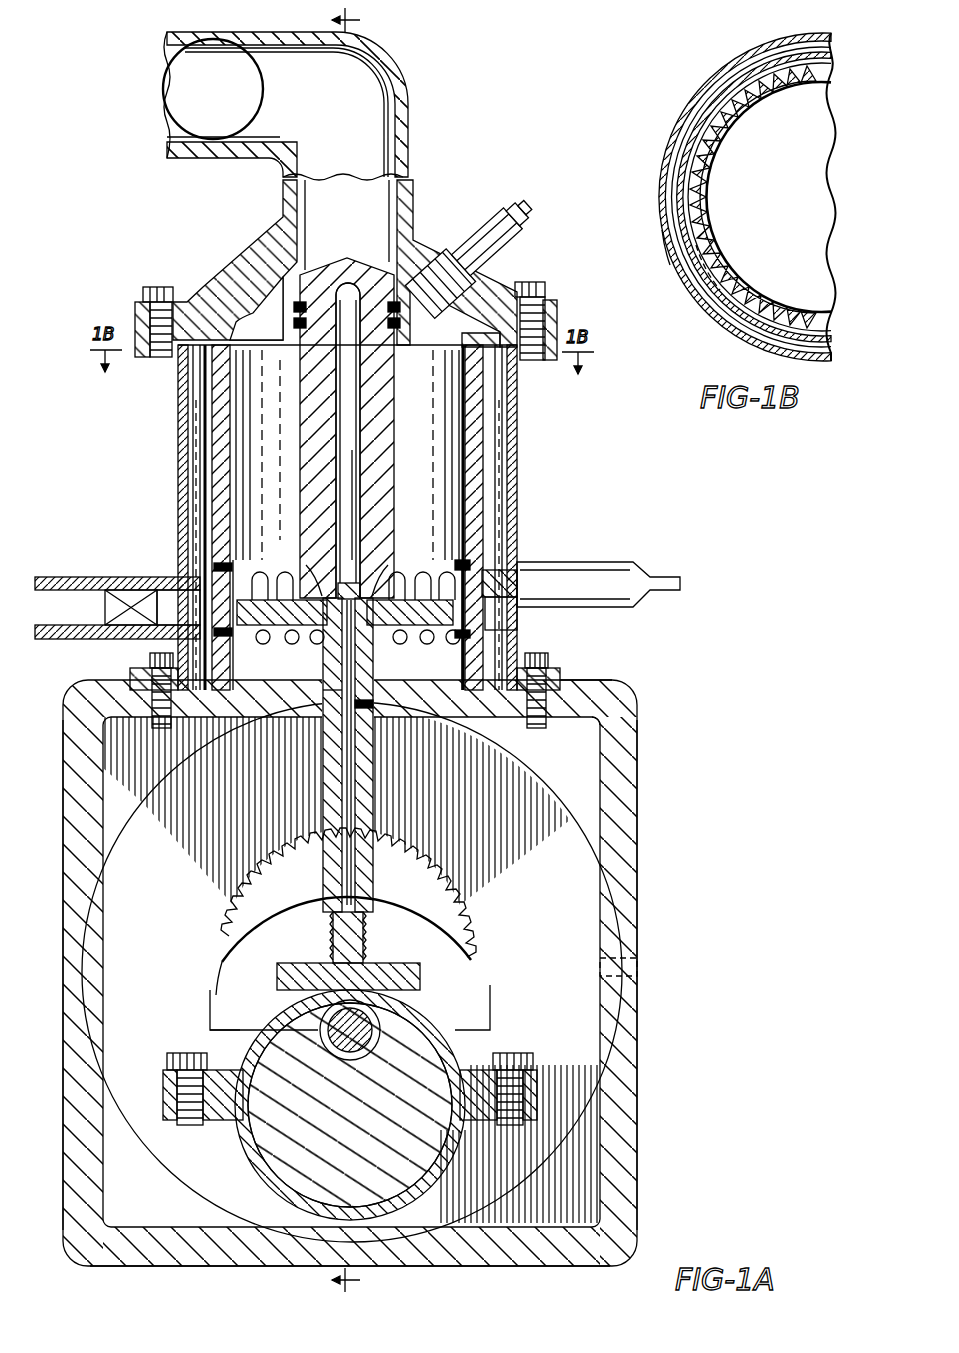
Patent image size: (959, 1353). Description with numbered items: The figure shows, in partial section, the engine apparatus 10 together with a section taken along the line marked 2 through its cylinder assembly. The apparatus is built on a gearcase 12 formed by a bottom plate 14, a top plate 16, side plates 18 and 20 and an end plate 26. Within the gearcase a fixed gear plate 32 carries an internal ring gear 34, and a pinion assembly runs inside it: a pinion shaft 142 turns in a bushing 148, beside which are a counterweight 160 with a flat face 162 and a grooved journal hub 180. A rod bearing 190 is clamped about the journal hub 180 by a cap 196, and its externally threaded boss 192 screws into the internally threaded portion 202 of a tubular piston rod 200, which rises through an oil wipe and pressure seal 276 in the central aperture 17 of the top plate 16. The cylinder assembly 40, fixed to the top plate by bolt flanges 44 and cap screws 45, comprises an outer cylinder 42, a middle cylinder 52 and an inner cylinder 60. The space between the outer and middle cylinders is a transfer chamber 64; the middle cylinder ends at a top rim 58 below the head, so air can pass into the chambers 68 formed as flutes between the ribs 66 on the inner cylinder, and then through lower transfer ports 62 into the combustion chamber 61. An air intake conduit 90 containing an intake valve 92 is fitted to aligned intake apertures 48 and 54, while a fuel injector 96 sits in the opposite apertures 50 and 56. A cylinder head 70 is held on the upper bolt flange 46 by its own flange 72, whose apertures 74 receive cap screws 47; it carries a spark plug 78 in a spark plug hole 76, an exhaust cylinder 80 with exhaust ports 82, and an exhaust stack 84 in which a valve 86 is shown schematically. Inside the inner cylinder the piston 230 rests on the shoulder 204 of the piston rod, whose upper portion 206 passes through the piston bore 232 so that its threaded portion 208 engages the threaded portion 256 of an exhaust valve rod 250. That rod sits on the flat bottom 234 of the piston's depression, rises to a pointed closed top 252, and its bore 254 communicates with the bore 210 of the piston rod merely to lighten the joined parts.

In FIG. 1A, the section line 2- 2 is at (352, 650).
In FIG. 1A, the engine apparatus 10 is at (190, 215).
In FIG. 1A, the gearcase 12 is at (652, 855).
In FIG. 1A, the bottom plate 14 is at (525, 1265).
In FIG. 1A, the top plate 16 is at (595, 680).
In FIG. 1A, the central hole or aperture 17 is at (323, 725).
In FIG. 1A, the side plate 18 is at (637, 905).
In FIG. 1A, the side plate 20 is at (63, 842).
In FIG. 1A, the end plate 26 is at (602, 722).
In FIG. 1A, the fixed gear plate 32 is at (548, 800).
In FIG. 1A, the internal ring gear 34 is at (455, 895).
In FIG. 1A, the cylinder assembly 40 is at (532, 438).
In FIG. 1A, the outer cylinder 42 is at (516, 475).
In FIG. 1B, the outer cylinder 42 is at (672, 157).
In FIG. 1A, the bolt flanges 44 is at (560, 668).
In FIG. 1A, the cap screws 45 is at (548, 655).
In FIG. 1A, the bolt flange 46 is at (557, 357).
In FIG. 1A, the bolts or cap screws 47 is at (548, 294).
In FIG. 1A, the air intake aperture 48 is at (160, 630).
In FIG. 1A, the fuel injector aperture 50 is at (517, 612).
In FIG. 1A, the middle cylinder 52 is at (516, 512).
In FIG. 1B, the middle cylinder 52 is at (667, 200).
In FIG. 1A, the air intake aperture 54 is at (170, 578).
In FIG. 1A, the fuel injector aperture 56 is at (517, 570).
In FIG. 1A, the top rim 58 is at (505, 398).
In FIG. 1B, the top rim 58 is at (693, 133).
In FIG. 1A, the inner cylinder 60 is at (230, 456).
In FIG. 1B, the inner cylinder 60 is at (710, 180).
In FIG. 1A, the interior combustion chamber 61 is at (238, 388).
In FIG. 1B, the interior combustion chamber 61 is at (798, 164).
In FIG. 1A, the lower transfer apertures or ports 62 is at (342, 617).
In FIG. 1A, the transfer chamber 64 is at (188, 440).
In FIG. 1B, the transfer chamber 64 is at (666, 245).
In FIG. 1A, the ribs or ridges 66 is at (470, 420).
In FIG. 1B, the ribs or ridges 66 is at (720, 215).
In FIG. 1A, the chambers 68 is at (232, 510).
In FIG. 1B, the chambers 68 is at (713, 277).
In FIG. 1A, the cylinder head 70 is at (268, 238).
In FIG. 1A, the flange 72 is at (135, 320).
In FIG. 1A, the apertures 74 is at (148, 302).
In FIG. 1A, the spark plug hole 76 is at (478, 240).
In FIG. 1A, the spark plug 78 is at (520, 248).
In FIG. 1A, the exhaust cylinder 80 is at (297, 340).
In FIG. 1A, the exhaust ports 82 is at (256, 308).
In FIG. 1A, the exhaust stack 84 is at (407, 132).
In FIG. 1A, the valve 86 is at (268, 96).
In FIG. 1A, the air intake conduit 90 is at (70, 577).
In FIG. 1A, the intake valve 92 is at (125, 592).
In FIG. 1A, the fuel injector 96 is at (603, 565).
In FIG. 1A, the pinion shaft 142 is at (380, 1032).
In FIG. 1A, the bushing 148 is at (320, 1032).
In FIG. 1A, the counterweight 160 is at (215, 1005).
In FIG. 1A, the flat face 162 is at (210, 1032).
In FIG. 1A, the grooved journal hub 180 is at (455, 1150).
In FIG. 1A, the rod bearing 190 is at (490, 1055).
In FIG. 1A, the externally threaded boss 192 is at (363, 940).
In FIG. 1A, the cap 196 is at (240, 1150).
In FIG. 1A, the piston rod 200 is at (374, 785).
In FIG. 1A, the internally threaded portion 202 is at (333, 935).
In FIG. 1A, the shoulder 204 is at (282, 636).
In FIG. 1A, the upwardly extending portion 206 is at (398, 580).
In FIG. 1A, the externally threaded portion 208 is at (380, 575).
In FIG. 1A, the bore 210 is at (356, 818).
In FIG. 1A, the piston 230 is at (282, 651).
In FIG. 1A, the bore 232 is at (413, 636).
In FIG. 1A, the flat bottom 234 is at (274, 596).
In FIG. 1A, the exhaust valve rod 250 is at (394, 392).
In FIG. 1A, the pointed and closed top 252 is at (349, 260).
In FIG. 1A, the bore 254 is at (352, 520).
In FIG. 1A, the internally threaded portion 256 is at (318, 580).
In FIG. 1A, the oil wipe and pressure seal 276 is at (376, 720).